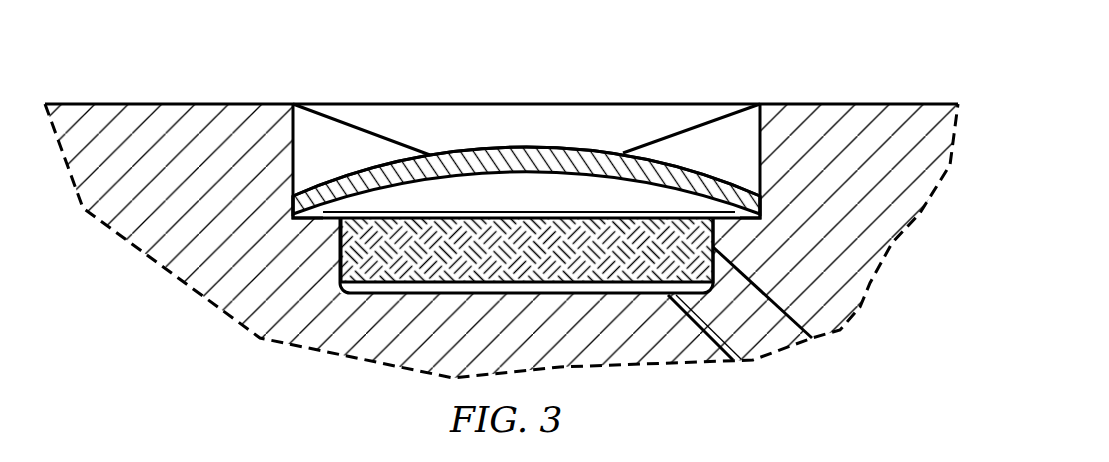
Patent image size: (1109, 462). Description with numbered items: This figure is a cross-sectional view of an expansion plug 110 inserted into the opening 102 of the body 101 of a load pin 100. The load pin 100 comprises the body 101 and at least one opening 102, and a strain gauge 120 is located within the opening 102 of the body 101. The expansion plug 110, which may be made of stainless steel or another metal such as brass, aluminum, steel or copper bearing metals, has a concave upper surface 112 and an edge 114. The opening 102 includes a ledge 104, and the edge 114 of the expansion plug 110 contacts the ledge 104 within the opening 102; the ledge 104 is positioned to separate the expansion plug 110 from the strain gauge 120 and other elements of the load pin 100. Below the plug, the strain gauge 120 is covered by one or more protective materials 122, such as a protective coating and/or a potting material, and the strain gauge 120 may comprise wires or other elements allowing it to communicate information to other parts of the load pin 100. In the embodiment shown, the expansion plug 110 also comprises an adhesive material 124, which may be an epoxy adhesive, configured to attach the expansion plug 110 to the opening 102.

The load pin 100 is at (781, 53).
The body 101 is at (850, 126).
The opening 102 is at (326, 131).
The ledge 104 is at (323, 221).
The expansion plug 110 is at (570, 147).
The concave upper surface 112 is at (483, 146).
The edge 114 is at (763, 216).
The strain gauge 120 is at (477, 288).
The protective materials 122 is at (362, 257).
The adhesive material 124 is at (512, 209).